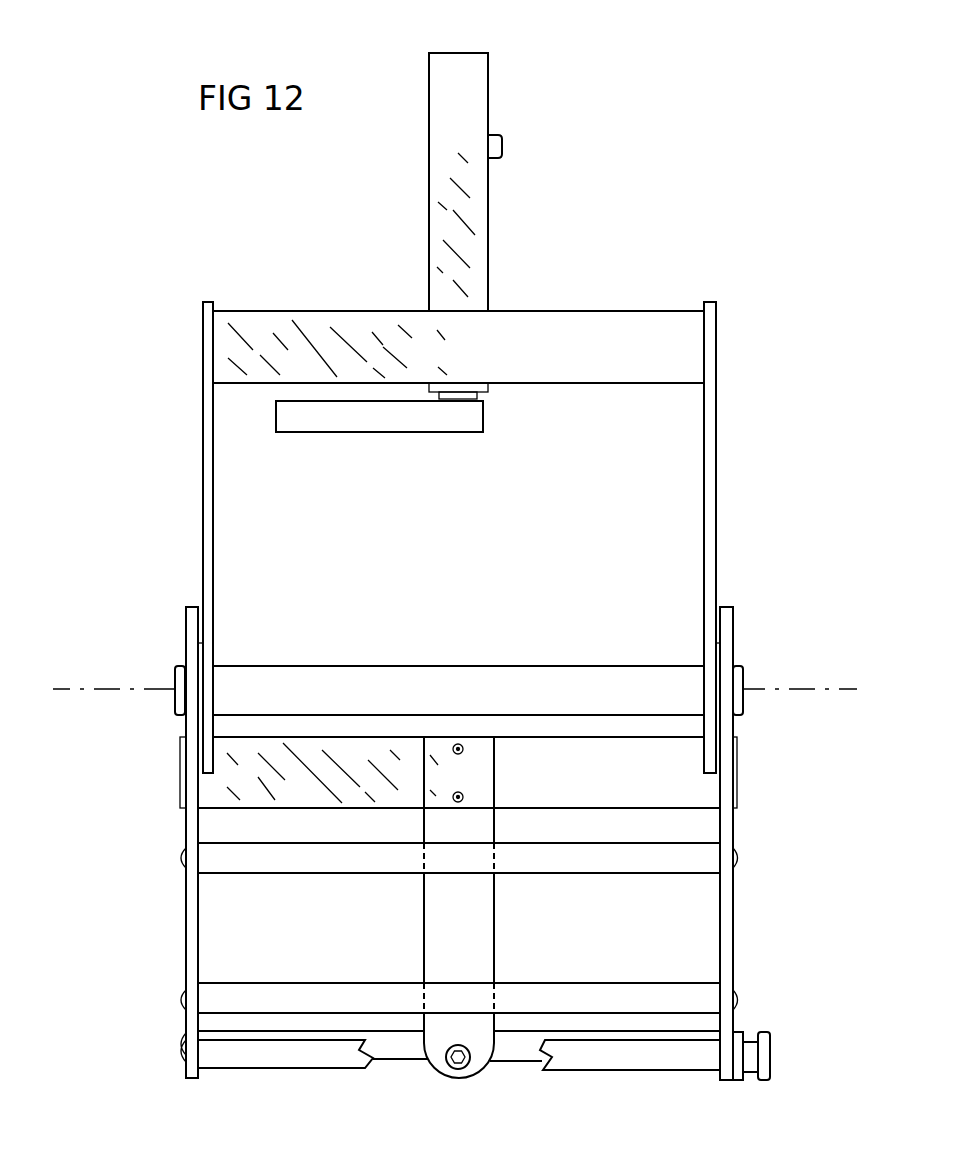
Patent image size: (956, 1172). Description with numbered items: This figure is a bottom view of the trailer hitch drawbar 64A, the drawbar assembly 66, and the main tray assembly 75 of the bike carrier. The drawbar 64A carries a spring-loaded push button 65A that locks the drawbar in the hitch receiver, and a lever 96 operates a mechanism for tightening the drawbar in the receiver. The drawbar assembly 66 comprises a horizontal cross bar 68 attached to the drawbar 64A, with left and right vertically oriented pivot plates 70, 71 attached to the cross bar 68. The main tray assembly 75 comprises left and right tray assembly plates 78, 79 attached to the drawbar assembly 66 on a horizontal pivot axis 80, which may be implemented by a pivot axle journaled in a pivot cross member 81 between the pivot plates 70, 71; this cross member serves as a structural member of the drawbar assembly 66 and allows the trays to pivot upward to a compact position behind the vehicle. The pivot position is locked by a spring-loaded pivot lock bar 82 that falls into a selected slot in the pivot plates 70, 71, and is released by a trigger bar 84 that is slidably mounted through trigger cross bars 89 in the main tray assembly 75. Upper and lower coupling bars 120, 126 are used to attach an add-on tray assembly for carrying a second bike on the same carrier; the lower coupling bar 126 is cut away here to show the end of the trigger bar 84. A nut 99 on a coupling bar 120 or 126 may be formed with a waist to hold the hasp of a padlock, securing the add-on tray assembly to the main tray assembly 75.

The trailer hitch drawbar 64A is at (449, 213).
The spring-loaded push button 65A is at (496, 135).
The drawbar assembly 66 is at (147, 450).
The horizontal cross bar 68 is at (458, 347).
The left pivot plate 70 is at (707, 512).
The right pivot plate 71 is at (210, 514).
The main tray assembly 75 is at (128, 893).
The left tray assembly plate 78 is at (723, 929).
The right tray assembly plate 79 is at (197, 930).
The horizontal pivot axis 80 is at (108, 690).
The pivot cross member 81 is at (447, 677).
The pivot lock bar 82 is at (459, 772).
The trigger bar 84 is at (459, 907).
The trigger cross bars 89 is at (592, 863).
The lever 96 is at (352, 423).
The nut 99 is at (747, 1032).
The upper coupling bar 120 is at (513, 1056).
The lower coupling bar 126 is at (587, 1053).